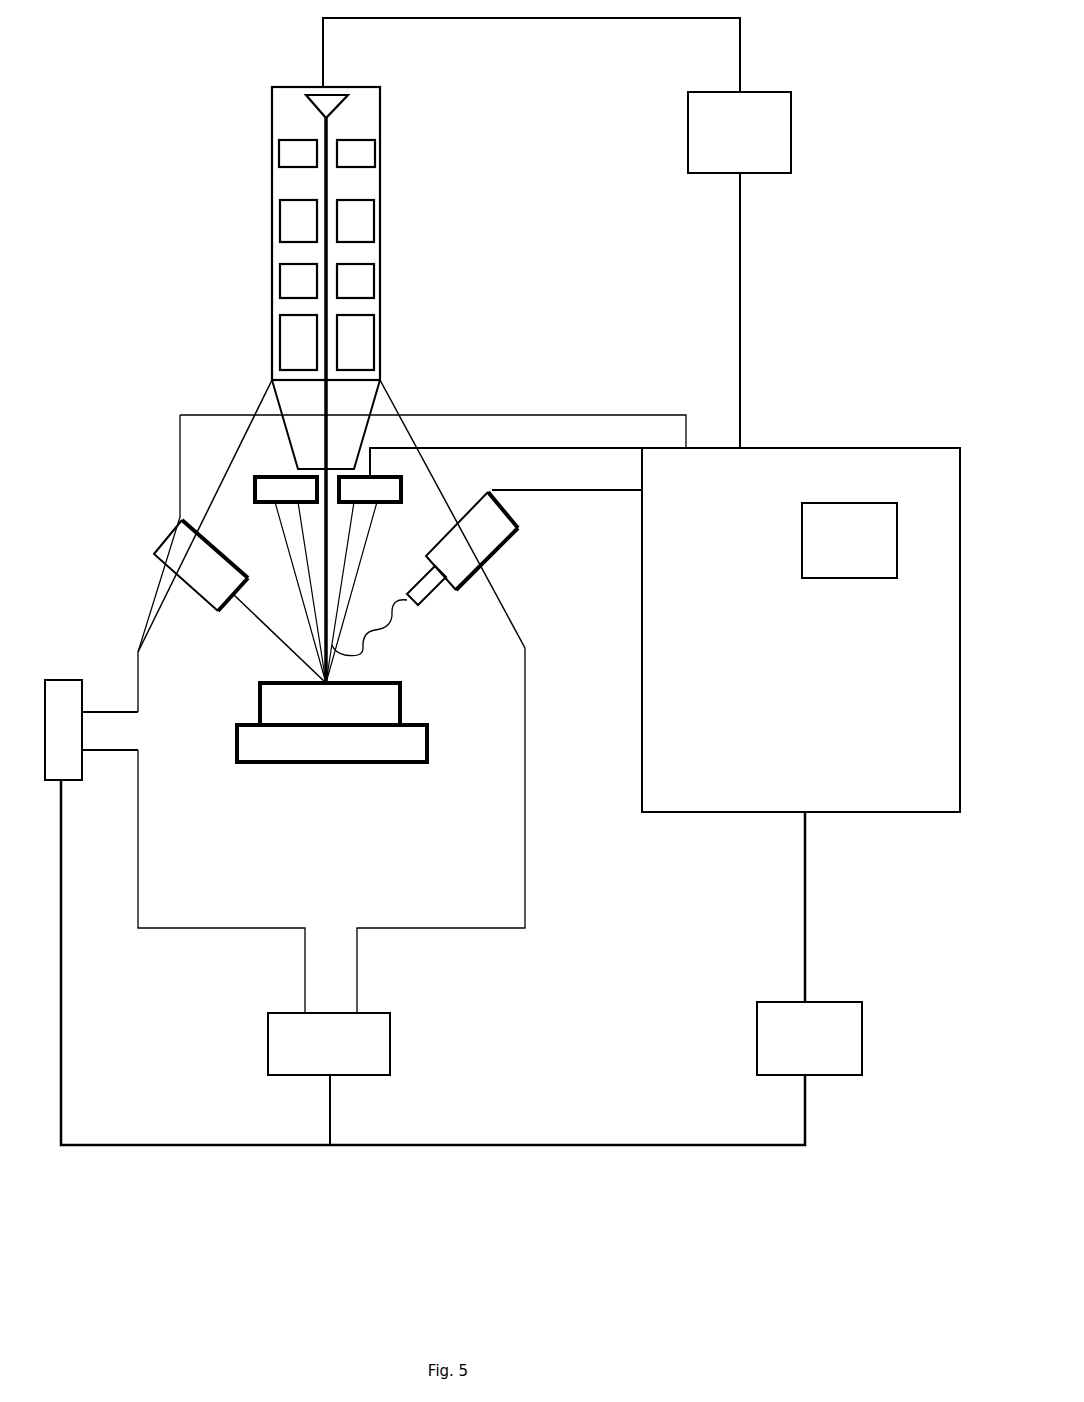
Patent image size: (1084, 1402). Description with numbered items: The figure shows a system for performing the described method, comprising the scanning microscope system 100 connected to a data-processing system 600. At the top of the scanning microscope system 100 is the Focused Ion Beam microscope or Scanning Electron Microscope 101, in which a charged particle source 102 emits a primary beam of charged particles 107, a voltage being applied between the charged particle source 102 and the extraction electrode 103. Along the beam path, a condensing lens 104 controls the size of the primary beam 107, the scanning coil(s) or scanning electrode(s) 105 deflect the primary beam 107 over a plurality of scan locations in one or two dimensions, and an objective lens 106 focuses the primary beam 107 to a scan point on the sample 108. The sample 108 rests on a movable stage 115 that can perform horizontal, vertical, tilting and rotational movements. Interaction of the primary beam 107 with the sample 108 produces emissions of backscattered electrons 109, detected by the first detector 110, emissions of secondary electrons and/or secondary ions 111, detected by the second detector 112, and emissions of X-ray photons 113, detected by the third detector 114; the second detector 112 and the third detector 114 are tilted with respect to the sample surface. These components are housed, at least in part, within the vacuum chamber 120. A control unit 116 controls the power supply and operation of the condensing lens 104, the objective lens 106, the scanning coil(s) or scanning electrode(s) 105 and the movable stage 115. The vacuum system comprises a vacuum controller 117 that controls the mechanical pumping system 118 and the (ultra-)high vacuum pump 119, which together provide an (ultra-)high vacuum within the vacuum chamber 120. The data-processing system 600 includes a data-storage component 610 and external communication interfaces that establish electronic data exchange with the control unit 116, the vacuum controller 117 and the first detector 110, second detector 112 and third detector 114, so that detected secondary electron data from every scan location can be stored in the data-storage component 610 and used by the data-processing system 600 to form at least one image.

The scanning microscope system 100 is at (406, 145).
The Focused Ion Beam microscope or Scanning Electron Microscope 101 is at (357, 86).
The charged particle source 102 is at (323, 90).
The extraction electrode 103 is at (277, 154).
The condensing lens 104 is at (277, 219).
The scanning coil(s) or scanning electrode(s) 105 is at (277, 283).
The objective lens 106 is at (277, 342).
The primary beam of charged particles 107 is at (322, 634).
The sample 108 is at (330, 704).
The emissions of backscattered electrons 109 is at (278, 545).
The first detector 110 is at (262, 476).
The emissions of secondary electrons and/or secondary ions 111 is at (257, 620).
The second detector 112 is at (168, 540).
The emissions of X-ray photons 113 is at (392, 634).
The third detector 114 is at (498, 554).
The movable stage 115 is at (332, 743).
The control unit 116 is at (739, 270).
The vacuum controller 117 is at (461, 962).
The mechanical pumping system 118 is at (329, 1079).
The (ultra-)high vacuum pump 119 is at (91, 730).
The vacuum chamber 120 is at (412, 714).
The data-processing system 600 is at (895, 446).
The data-storage component 610 is at (849, 540).